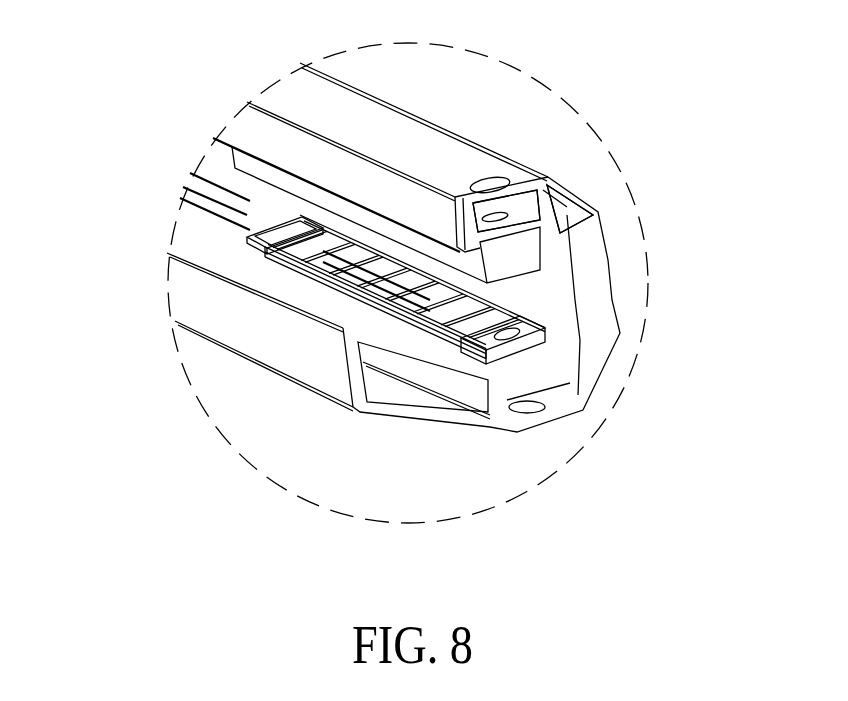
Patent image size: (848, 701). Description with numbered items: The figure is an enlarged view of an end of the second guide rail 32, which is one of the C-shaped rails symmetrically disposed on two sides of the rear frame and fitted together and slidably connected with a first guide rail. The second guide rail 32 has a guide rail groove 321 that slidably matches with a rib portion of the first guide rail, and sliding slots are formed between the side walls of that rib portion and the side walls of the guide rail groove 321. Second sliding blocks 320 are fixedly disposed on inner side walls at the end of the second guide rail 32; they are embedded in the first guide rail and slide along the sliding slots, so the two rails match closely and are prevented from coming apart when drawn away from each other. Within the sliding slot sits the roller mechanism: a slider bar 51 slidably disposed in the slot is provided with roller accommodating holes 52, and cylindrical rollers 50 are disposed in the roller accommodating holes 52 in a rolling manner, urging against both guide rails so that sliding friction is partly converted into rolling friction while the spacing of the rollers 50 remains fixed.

The second guide rail 32 is at (450, 157).
The second sliding blocks 320 is at (553, 338).
The guide rail groove 321 is at (223, 222).
The rollers 50 is at (298, 236).
The slider bar 51 is at (300, 263).
The roller accommodating holes 52 is at (410, 304).